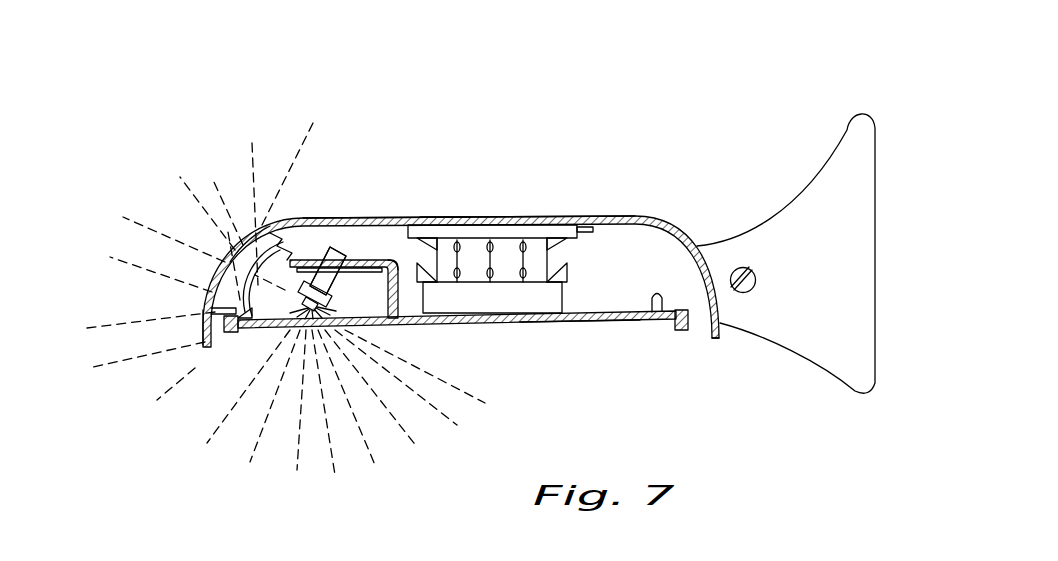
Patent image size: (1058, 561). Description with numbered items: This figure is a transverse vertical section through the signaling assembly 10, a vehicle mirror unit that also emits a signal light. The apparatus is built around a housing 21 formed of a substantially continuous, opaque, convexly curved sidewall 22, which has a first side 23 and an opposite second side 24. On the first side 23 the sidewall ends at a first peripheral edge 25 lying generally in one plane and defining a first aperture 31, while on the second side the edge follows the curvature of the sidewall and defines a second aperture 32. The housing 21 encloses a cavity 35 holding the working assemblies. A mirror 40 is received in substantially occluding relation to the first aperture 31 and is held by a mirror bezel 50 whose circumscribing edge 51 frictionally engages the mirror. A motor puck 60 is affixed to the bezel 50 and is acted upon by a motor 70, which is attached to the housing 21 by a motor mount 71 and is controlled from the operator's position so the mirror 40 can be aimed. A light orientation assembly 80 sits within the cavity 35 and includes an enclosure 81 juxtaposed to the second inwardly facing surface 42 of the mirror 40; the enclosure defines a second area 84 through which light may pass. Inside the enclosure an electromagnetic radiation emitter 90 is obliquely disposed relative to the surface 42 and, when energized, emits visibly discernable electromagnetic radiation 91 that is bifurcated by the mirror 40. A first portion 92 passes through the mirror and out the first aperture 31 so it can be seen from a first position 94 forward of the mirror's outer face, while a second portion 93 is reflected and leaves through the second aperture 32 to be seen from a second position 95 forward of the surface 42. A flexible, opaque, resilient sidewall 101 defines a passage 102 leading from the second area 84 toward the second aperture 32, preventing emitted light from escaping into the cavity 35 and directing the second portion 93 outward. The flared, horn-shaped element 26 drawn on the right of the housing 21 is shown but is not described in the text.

The signaling assembly 10 is at (638, 125).
The housing 21 is at (673, 228).
The convexly curved sidewall 22 is at (510, 212).
The first side 23 is at (498, 335).
The second side 24 is at (441, 205).
The first peripheral edge 25 is at (203, 347).
The bell-shaped horn 26 is at (825, 262).
The first aperture 31 is at (701, 347).
The second aperture 32 is at (247, 233).
The cavity 35 is at (606, 288).
The mirror 40 is at (577, 335).
The second inwardly facing surface 42 is at (361, 316).
The mirror bezel 50 is at (654, 322).
The circumscribing edge 51 is at (683, 331).
The motor puck 60 is at (533, 298).
The motor 70 is at (534, 262).
The motor mount 71 is at (479, 233).
The light orientation assembly 80 is at (328, 248).
The enclosure 81 is at (397, 256).
The second area 84 is at (240, 287).
The electromagnetic radiation emitter 90 is at (336, 266).
The visibly discernable electromagnetic radiation 91 is at (373, 458).
The first portion 92 is at (320, 394).
The second portion 93 is at (187, 234).
The first position 94 is at (292, 514).
The second position 95 is at (274, 137).
The sidewall 101 is at (205, 304).
The passage 102 is at (243, 240).